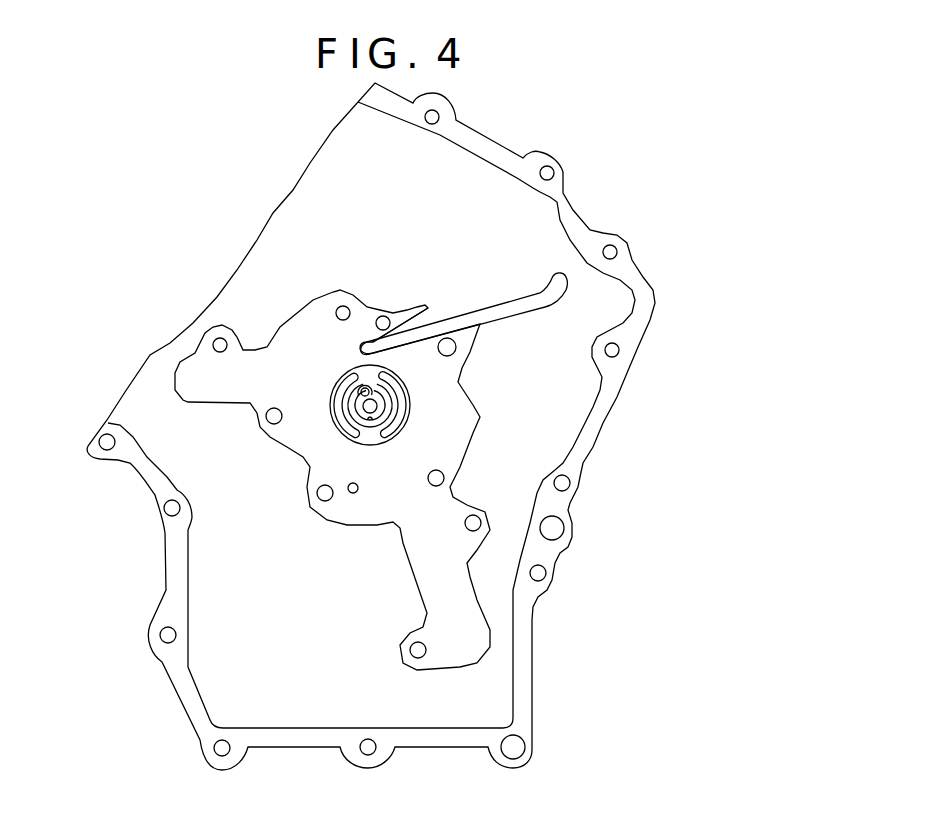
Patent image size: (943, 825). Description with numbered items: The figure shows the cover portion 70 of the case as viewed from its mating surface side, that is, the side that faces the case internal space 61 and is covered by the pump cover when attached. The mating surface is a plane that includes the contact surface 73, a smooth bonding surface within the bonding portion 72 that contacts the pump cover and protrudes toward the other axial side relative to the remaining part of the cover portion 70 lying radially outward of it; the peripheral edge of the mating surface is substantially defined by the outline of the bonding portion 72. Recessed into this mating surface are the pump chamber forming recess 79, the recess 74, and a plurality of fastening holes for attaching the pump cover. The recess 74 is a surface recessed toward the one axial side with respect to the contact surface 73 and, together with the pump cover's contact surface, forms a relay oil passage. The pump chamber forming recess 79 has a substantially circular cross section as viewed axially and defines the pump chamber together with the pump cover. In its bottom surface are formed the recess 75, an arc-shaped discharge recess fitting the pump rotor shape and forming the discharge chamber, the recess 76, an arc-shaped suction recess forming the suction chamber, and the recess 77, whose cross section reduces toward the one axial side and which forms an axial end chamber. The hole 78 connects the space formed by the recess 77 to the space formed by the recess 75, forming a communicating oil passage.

The cover portion 70 is at (502, 143).
The case internal space 61 is at (378, 236).
The bonding portion 72 is at (316, 452).
The contact surface 73 is at (516, 308).
The recess 74 is at (472, 300).
The recess 75 is at (346, 408).
The recess 76 is at (404, 418).
The recess 77 is at (370, 422).
The hole 78 is at (371, 391).
The pump chamber forming recess 79 is at (351, 376).